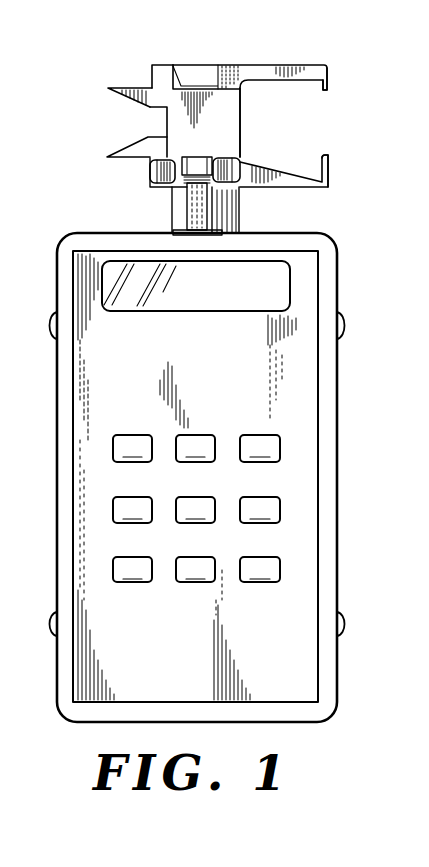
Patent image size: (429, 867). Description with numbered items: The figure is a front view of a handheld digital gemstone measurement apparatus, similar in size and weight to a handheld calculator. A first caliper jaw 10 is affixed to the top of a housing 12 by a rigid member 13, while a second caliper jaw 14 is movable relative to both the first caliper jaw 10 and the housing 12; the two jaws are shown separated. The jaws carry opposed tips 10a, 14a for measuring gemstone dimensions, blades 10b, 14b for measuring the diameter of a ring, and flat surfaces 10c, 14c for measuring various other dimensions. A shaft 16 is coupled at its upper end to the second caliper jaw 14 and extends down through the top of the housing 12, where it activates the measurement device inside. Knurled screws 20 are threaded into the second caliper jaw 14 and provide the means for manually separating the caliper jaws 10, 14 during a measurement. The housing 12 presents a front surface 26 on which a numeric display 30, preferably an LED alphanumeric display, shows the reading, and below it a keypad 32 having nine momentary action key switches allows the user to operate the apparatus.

The first caliper jaw 10 is at (260, 70).
The tip of first caliper jaw 10a is at (328, 84).
The blade of first caliper jaw 10b is at (124, 90).
The flat surface of first caliper jaw 10c is at (222, 88).
The housing 12 is at (73, 233).
The rigid member 13 is at (167, 118).
The second caliper jaw 14 is at (288, 188).
The tip of second caliper jaw 14a is at (329, 163).
The blade of second caliper jaw 14b is at (108, 151).
The flat surface of second caliper jaw 14c is at (197, 156).
The shaft 16 is at (187, 207).
The knurled screws 20 is at (152, 173).
The front surface 26 is at (100, 385).
The numeric display 30 is at (247, 300).
The keypad 32 is at (187, 589).